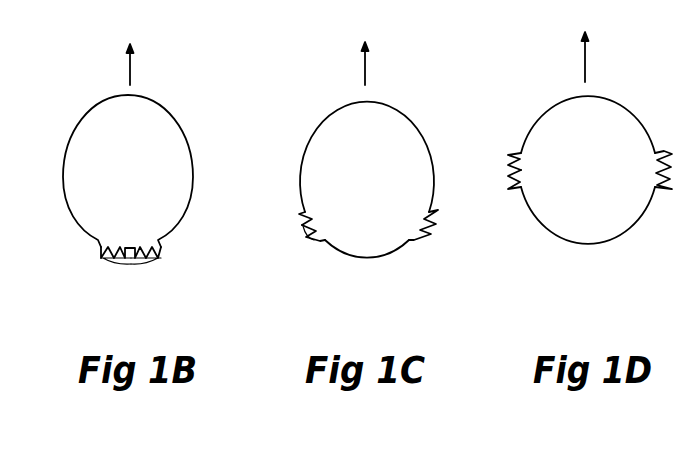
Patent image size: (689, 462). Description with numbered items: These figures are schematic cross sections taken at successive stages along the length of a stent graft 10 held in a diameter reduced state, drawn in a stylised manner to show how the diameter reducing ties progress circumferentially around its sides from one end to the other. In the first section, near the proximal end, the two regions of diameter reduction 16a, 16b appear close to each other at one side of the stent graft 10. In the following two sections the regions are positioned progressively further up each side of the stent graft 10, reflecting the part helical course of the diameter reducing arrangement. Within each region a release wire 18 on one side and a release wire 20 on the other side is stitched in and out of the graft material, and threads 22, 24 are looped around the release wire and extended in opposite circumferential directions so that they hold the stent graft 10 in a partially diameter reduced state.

In FIG. 1B, the bag body 10 is at (92, 108).
In FIG. 1C, the bag body 10 is at (327, 110).
In FIG. 1D, the bag body 10 is at (547, 110).
In FIG. 1B, the region of diameter reduction 16a is at (108, 258).
In FIG. 1B, the region of diameter reduction 16b is at (145, 258).
In FIG. 1C, the release wire 18 is at (307, 233).
In FIG. 1C, the release wire 20 is at (435, 233).
In FIG. 1C, the thread 22 is at (302, 223).
In FIG. 1D, the thread 22 is at (508, 165).
In FIG. 1C, the thread 24 is at (308, 243).
In FIG. 1D, the thread 24 is at (508, 183).